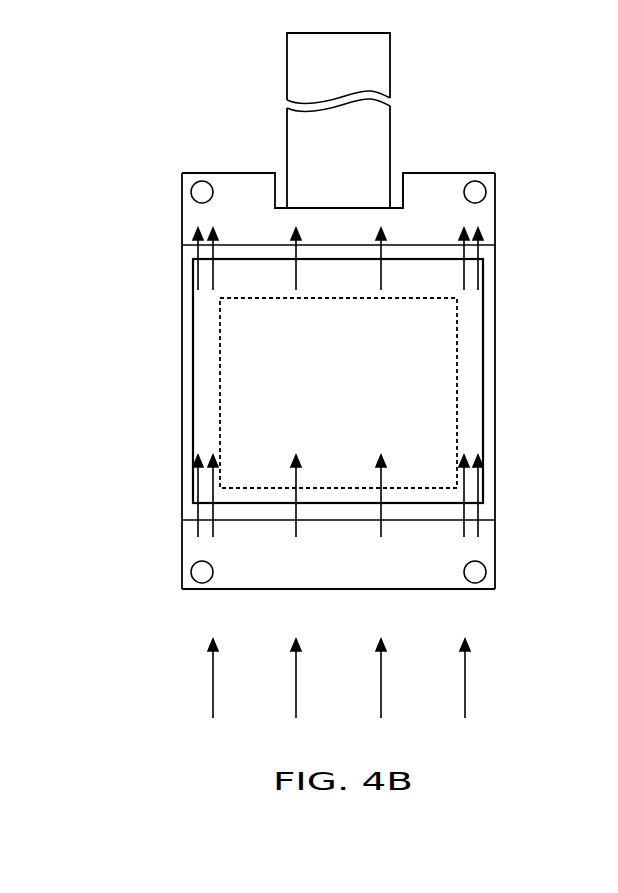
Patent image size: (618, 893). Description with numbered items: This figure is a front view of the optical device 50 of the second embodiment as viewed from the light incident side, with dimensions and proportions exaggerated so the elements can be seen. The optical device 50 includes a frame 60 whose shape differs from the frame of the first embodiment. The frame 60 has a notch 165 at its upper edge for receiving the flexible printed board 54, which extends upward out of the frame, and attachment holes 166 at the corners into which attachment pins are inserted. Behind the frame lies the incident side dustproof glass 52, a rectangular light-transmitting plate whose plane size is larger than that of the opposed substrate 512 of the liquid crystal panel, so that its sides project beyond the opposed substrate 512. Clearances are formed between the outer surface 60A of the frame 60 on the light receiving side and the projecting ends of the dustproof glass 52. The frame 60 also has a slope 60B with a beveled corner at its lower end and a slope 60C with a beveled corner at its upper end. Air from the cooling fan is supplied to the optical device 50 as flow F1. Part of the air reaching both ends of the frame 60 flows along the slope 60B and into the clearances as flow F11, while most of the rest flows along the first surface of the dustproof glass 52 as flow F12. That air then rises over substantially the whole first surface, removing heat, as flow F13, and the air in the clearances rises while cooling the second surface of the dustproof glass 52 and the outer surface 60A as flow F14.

The optical device 50 is at (508, 113).
The incident side dustproof glass 52 is at (484, 330).
The flexible printed board 54 is at (382, 57).
The frame 60 is at (462, 186).
The outer surface 60A is at (182, 393).
The slope 60B is at (341, 590).
The slope 60C is at (245, 185).
The notch 165 is at (398, 186).
The attachment holes 166 is at (191, 189).
The opposed substrate 512 is at (458, 383).
The flow F1 is at (296, 677).
The flow F11 is at (193, 472).
The flow F12 is at (296, 527).
The flow F13 is at (296, 266).
The flow F14 is at (193, 277).